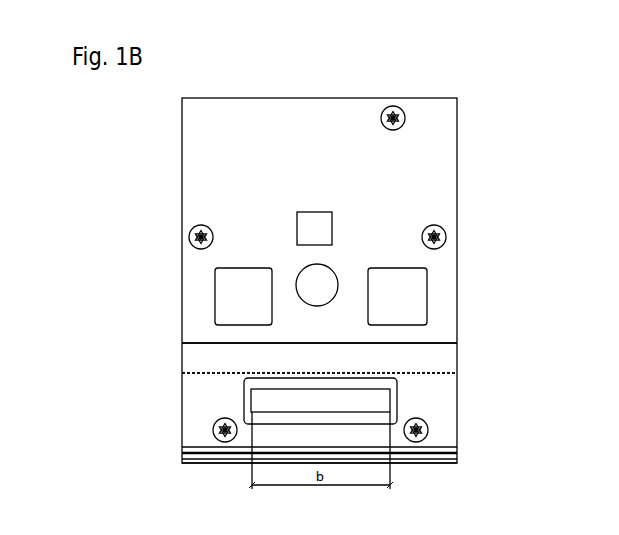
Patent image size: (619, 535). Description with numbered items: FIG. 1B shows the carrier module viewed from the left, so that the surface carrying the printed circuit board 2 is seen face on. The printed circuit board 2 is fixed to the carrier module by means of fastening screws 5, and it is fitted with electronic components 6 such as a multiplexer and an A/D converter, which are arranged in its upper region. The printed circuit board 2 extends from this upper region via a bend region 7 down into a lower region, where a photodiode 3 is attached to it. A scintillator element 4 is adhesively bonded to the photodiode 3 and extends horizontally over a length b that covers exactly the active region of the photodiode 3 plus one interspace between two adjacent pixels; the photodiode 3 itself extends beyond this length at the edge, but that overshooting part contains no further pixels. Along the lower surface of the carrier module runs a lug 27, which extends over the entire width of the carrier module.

The printed circuit board 2 is at (400, 187).
The photodiode 3 is at (395, 392).
The scintillator element 4 is at (292, 400).
The fastening screws 5 is at (199, 236).
The electronic components 6 is at (409, 293).
The bend region 7 is at (440, 360).
The lug 27 is at (425, 458).